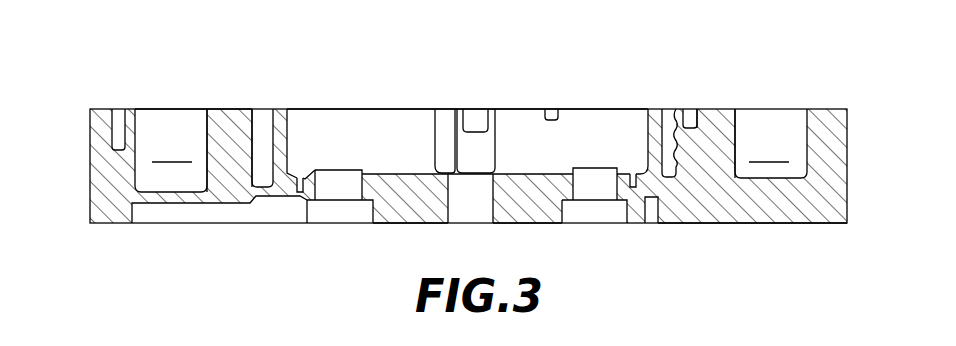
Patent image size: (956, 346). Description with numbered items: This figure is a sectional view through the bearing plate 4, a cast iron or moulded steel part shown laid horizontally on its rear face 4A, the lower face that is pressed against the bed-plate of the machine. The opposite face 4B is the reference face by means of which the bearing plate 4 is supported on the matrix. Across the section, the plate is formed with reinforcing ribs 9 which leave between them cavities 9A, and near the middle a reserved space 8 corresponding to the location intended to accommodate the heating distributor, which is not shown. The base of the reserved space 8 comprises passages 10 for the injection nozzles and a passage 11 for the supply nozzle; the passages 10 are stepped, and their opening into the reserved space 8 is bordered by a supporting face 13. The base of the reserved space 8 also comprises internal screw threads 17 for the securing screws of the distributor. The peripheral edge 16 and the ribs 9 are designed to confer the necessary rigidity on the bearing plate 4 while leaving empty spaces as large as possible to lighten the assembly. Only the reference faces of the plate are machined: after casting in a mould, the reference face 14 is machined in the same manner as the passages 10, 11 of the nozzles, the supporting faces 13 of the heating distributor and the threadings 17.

The bearing plate 4 is at (849, 128).
The rear face 4A is at (830, 227).
The face 4B is at (818, 108).
The reserved space 8 is at (525, 125).
The reinforcing ribs 9 is at (217, 132).
The cavities 9A is at (471, 150).
The passages 10 is at (340, 175).
The passage 11 is at (460, 213).
The supporting face 13 is at (305, 182).
The reference face 14 is at (722, 108).
The peripheral edge 16 is at (92, 142).
The internal screw threads 17 is at (300, 177).